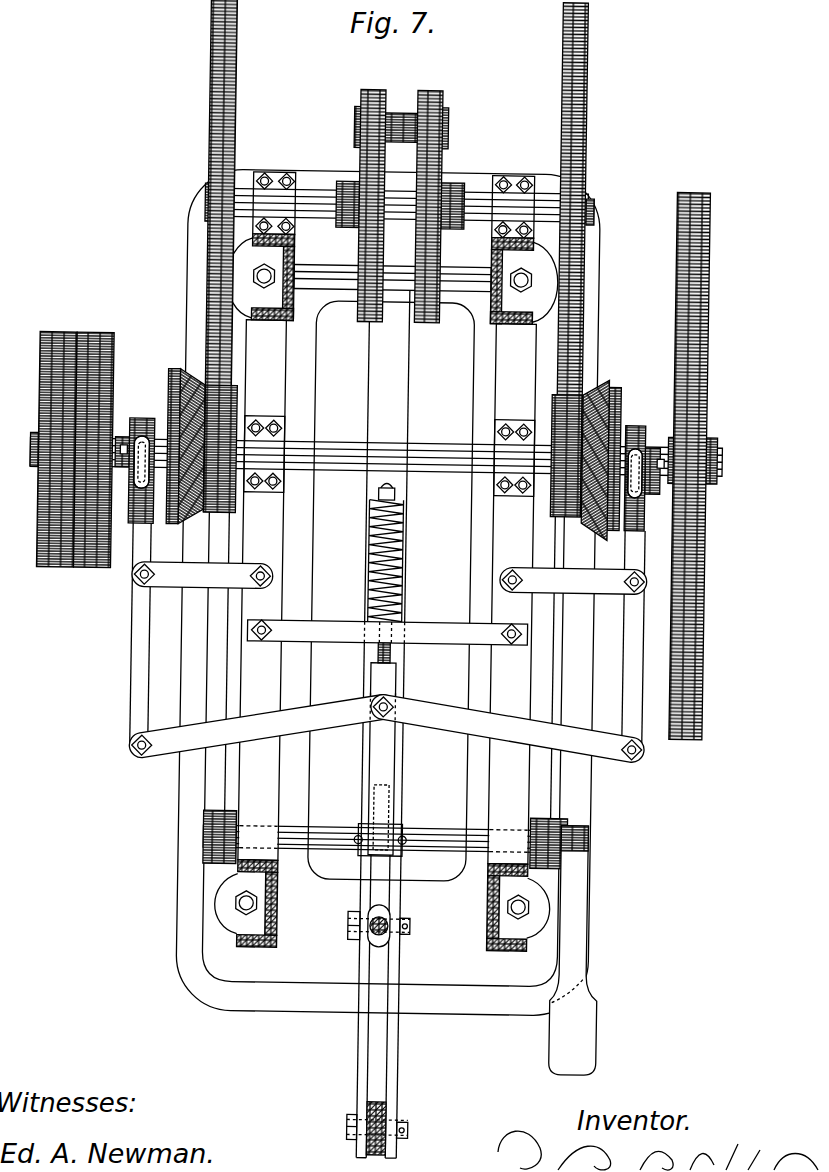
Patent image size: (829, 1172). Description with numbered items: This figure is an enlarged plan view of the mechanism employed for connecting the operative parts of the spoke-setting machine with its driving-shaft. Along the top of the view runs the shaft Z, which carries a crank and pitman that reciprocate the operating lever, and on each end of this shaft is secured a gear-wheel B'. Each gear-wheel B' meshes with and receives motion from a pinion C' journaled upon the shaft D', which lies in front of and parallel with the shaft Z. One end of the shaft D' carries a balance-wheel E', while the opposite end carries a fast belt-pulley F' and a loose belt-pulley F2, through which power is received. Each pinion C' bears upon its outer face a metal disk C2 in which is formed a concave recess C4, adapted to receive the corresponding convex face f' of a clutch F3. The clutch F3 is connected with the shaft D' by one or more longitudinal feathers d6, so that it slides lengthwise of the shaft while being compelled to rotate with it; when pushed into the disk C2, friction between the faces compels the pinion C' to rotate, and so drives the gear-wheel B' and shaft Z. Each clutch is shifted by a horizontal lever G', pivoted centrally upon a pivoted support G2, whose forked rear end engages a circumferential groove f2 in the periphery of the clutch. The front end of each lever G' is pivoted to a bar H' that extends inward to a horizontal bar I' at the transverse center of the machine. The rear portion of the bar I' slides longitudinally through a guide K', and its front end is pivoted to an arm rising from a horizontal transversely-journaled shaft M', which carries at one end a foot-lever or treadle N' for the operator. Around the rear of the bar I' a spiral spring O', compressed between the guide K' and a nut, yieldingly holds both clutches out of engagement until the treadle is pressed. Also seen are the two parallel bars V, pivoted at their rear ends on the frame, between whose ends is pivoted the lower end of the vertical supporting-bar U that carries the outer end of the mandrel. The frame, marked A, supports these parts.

The frame / bearing blocks A is at (388, 592).
The gear-wheel B' is at (397, 409).
The shaft Z is at (410, 159).
The shaft D' is at (376, 442).
The fast belt-pulley F' is at (52, 449).
The loose belt-pulley F2 is at (93, 450).
The clutch F3 is at (164, 505).
The convex face of clutch f' is at (144, 441).
The circumferential groove f2 is at (635, 430).
The longitudinal feather d6 is at (120, 448).
The concave recess C4 is at (190, 380).
The metal disk C2 is at (396, 452).
The pinion C' is at (393, 472).
The balance-wheel E' is at (701, 466).
The horizontal lever G' is at (371, 638).
The pivoted support G2 is at (389, 580).
The spiral spring O' is at (400, 552).
The guide K' is at (387, 633).
The horizontal bar I' is at (381, 750).
The bar H' is at (387, 726).
The horizontal transversely-journaled shaft M' is at (385, 831).
The foot-lever or treadle N' is at (574, 951).
The parallel bars V is at (400, 970).
The supporting-bar U is at (392, 1110).